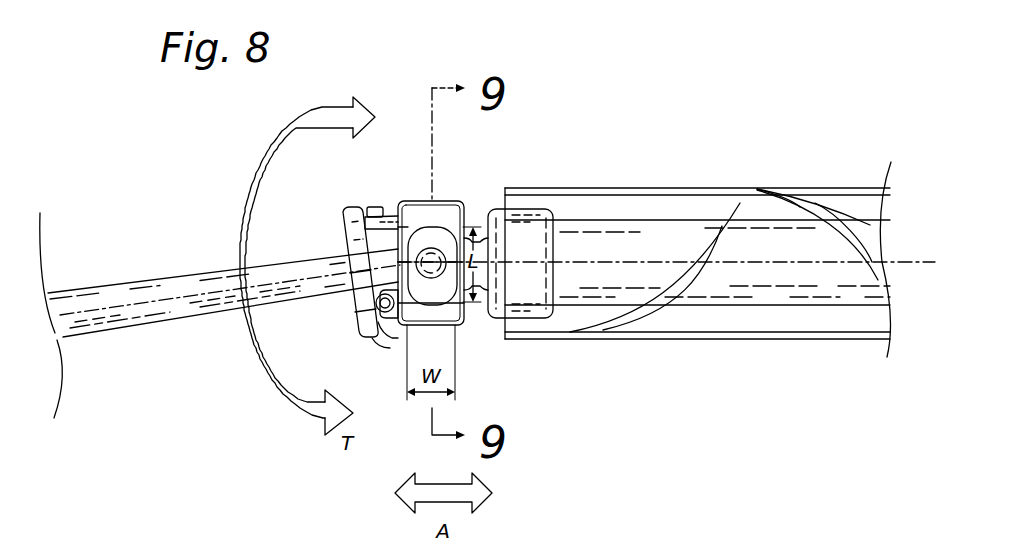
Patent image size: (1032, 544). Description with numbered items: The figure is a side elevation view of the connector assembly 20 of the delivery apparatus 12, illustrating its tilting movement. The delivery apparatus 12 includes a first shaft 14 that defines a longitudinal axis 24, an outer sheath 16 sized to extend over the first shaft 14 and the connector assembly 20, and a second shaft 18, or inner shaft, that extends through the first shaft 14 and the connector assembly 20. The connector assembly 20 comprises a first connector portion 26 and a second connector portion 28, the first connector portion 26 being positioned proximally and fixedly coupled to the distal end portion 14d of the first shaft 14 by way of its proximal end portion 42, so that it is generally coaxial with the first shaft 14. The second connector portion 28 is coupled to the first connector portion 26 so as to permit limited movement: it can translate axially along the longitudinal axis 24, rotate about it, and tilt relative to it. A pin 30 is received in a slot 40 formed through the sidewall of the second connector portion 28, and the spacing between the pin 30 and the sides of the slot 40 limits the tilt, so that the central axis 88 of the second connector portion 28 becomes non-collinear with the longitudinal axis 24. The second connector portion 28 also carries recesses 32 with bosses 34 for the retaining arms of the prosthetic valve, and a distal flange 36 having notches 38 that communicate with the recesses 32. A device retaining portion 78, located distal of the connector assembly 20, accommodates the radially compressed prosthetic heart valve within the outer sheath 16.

The delivery apparatus 12 is at (745, 91).
The first shaft 14 is at (816, 216).
The distal end portion of the first shaft 14d is at (620, 220).
The outer sheath 16 is at (757, 190).
The second shaft 18 is at (130, 283).
The connector assembly 20 is at (416, 127).
The longitudinal axis 24 is at (921, 262).
The first connector portion 26 is at (494, 203).
The second connector portion 28 is at (417, 194).
The pin 30 is at (431, 258).
The recess 32 is at (398, 337).
The boss 34 is at (372, 210).
The flange 36 is at (347, 211).
The notch 38 is at (371, 300).
The slot 40 is at (432, 292).
The proximal end portion 42 is at (527, 212).
The device retaining portion 78 is at (164, 240).
The central axis 88 is at (43, 317).